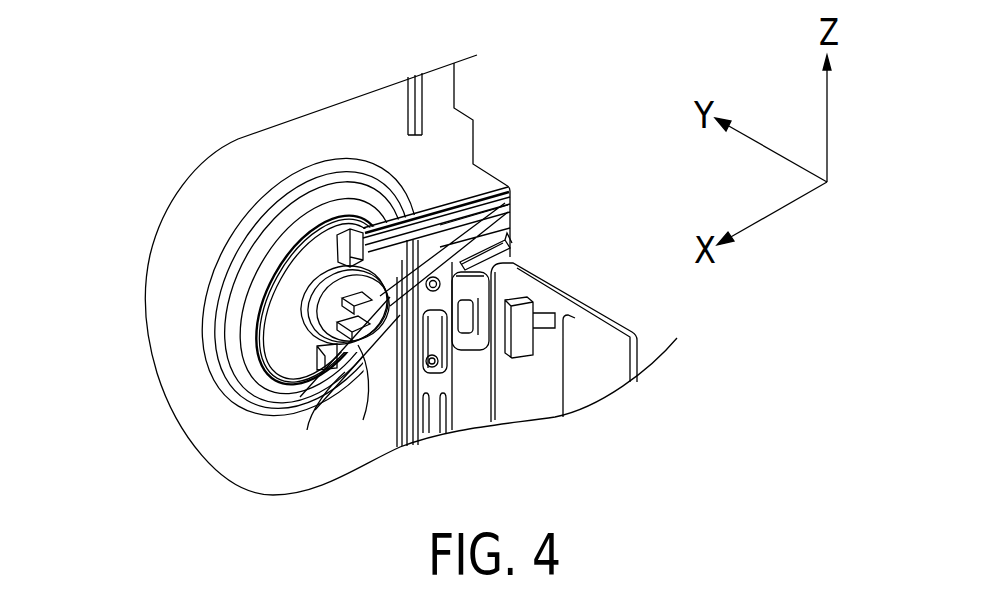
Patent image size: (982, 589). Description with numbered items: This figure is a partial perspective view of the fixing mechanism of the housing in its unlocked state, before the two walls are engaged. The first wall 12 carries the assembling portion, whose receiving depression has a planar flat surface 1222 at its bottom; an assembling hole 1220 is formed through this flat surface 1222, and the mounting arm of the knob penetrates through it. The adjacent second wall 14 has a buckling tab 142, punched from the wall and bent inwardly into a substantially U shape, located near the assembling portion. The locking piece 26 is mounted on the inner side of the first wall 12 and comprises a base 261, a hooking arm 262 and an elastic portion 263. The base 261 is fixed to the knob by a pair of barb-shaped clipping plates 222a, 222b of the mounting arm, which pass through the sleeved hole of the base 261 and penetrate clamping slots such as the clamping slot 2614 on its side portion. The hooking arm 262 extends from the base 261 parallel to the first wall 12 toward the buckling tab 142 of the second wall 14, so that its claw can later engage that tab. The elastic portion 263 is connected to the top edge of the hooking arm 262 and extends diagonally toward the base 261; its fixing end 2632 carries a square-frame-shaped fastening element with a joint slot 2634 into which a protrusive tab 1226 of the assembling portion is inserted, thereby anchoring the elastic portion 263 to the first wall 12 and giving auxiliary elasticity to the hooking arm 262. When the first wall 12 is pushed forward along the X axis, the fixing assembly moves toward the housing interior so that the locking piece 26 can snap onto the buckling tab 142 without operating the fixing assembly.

The first wall 12 is at (228, 160).
The second wall 14 is at (618, 360).
The buckling tab 142 is at (507, 245).
The locking piece 26 is at (462, 191).
The base 261 is at (296, 378).
The hooking arm 262 is at (492, 228).
The elastic portion 263 is at (435, 215).
The clamping slot 2614 is at (327, 393).
The fixing end 2632 is at (324, 257).
The joint slot 2634 is at (385, 237).
The assembling hole 1220 is at (303, 345).
The flat surface 1222 is at (297, 298).
The protrusive tab 1226 is at (318, 255).
The clipping plate 222a is at (398, 397).
The clipping plate 222b is at (367, 380).